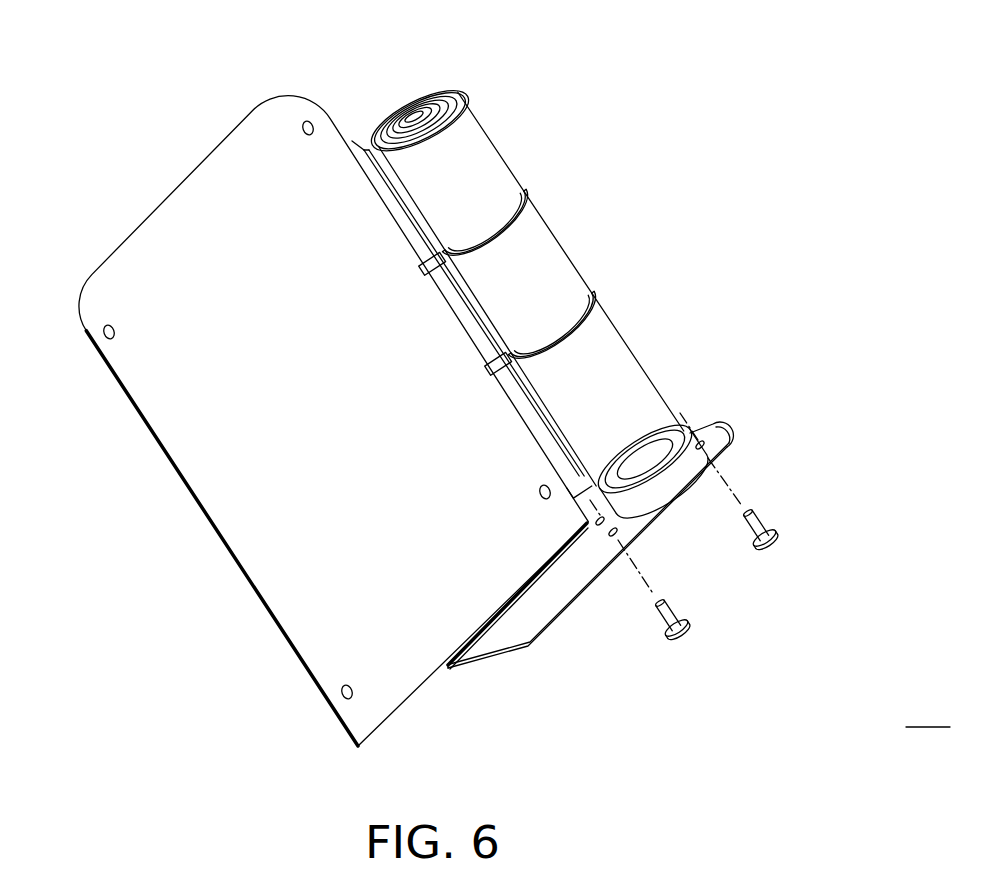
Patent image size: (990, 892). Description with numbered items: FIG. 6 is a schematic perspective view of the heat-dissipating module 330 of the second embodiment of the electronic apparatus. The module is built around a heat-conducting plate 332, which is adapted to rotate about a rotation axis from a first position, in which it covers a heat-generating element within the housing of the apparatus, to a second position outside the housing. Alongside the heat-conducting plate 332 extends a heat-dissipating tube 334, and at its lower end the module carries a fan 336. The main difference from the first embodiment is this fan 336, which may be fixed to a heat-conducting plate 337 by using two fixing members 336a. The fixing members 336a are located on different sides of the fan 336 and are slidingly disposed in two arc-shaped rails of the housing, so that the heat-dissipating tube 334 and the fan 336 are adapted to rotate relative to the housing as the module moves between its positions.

The heat-dissipating module 330 is at (928, 712).
The heat-conducting plate 332 is at (223, 487).
The heat-dissipating tube 334 is at (640, 372).
The fan 336 is at (697, 433).
The fixing members 336a is at (770, 548).
The heat-conducting plate 337 is at (553, 605).